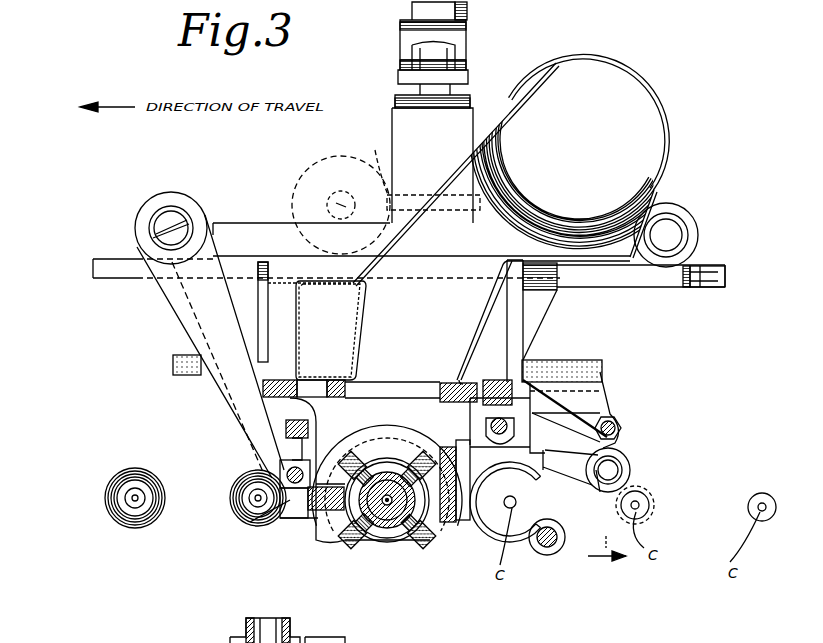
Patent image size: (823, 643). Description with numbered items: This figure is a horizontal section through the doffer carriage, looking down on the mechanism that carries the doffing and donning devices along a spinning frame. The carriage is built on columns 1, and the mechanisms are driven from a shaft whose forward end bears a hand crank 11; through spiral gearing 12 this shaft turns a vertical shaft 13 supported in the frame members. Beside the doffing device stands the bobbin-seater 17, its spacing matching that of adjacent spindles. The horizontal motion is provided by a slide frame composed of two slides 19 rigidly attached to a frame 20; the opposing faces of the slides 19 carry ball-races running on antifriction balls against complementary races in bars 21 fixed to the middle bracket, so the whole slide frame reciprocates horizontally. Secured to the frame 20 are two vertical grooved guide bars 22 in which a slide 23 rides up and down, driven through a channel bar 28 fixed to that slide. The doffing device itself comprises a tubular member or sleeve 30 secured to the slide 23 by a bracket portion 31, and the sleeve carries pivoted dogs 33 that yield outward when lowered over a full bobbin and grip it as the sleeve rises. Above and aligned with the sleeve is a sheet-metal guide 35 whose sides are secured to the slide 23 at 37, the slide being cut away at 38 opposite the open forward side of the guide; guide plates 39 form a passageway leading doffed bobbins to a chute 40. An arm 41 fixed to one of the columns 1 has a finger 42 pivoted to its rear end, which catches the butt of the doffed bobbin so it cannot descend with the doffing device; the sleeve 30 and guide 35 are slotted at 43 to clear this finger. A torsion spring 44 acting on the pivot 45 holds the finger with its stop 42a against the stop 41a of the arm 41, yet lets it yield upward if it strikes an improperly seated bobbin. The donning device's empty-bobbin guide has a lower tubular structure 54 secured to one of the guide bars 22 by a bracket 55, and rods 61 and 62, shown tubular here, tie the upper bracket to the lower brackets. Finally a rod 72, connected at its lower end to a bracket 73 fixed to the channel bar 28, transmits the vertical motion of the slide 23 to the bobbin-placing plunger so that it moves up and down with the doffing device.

The column 1 is at (173, 206).
The hand crank 11 is at (452, 4).
The spiral gearing 12 is at (423, 169).
The vertical shaft 13 is at (330, 195).
The bobbin-seater 17 is at (652, 498).
The slide 19 is at (93, 270).
The frame 20 is at (265, 314).
The bar 21 is at (703, 289).
The vertical grooved guide bar 22 is at (280, 396).
The slide 23 is at (318, 378).
The channel bar 28 is at (173, 363).
The tubular member or sleeve 30 is at (480, 338).
The bracket portion 31 is at (357, 553).
The pivoted dog 33 is at (358, 463).
The guide 35 is at (382, 555).
The securing point of guide sides 37 is at (278, 440).
The cut-away portion of slide 38 is at (383, 393).
The guide plate 39 is at (378, 213).
The chute 40 is at (658, 120).
The arm 41 is at (240, 384).
The stop of the arm 41a is at (258, 552).
The finger 42 is at (322, 522).
The stop of the finger 42a is at (256, 526).
The slot 43 is at (322, 530).
The torsion spring 44 is at (282, 470).
The pivot 45 is at (290, 442).
The tubular structure 54 is at (496, 520).
The bracket 55 is at (545, 452).
The rod 61 is at (546, 556).
The rod 62 is at (606, 492).
The rod 72 is at (622, 428).
The bracket 73 is at (545, 403).